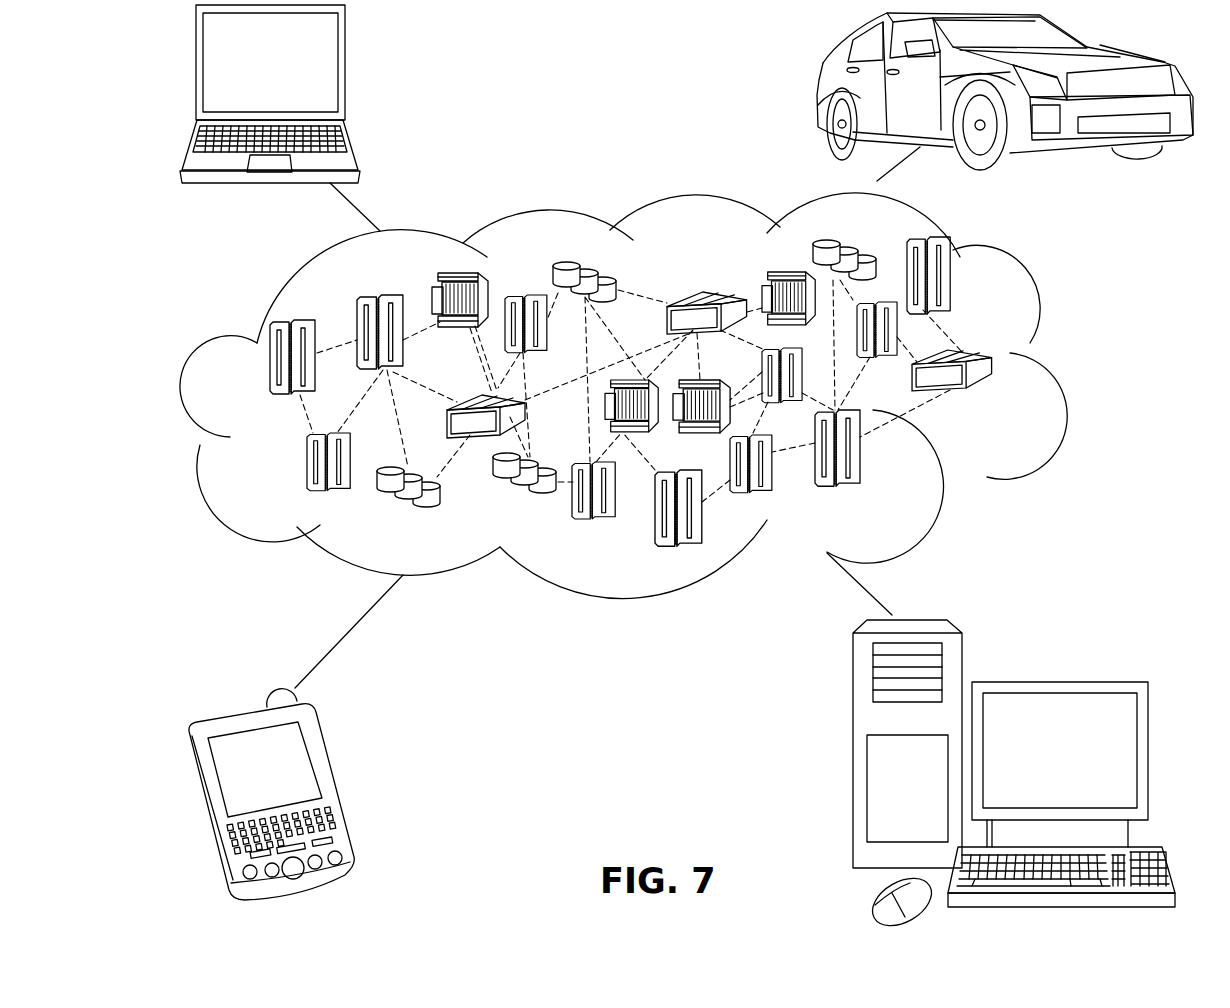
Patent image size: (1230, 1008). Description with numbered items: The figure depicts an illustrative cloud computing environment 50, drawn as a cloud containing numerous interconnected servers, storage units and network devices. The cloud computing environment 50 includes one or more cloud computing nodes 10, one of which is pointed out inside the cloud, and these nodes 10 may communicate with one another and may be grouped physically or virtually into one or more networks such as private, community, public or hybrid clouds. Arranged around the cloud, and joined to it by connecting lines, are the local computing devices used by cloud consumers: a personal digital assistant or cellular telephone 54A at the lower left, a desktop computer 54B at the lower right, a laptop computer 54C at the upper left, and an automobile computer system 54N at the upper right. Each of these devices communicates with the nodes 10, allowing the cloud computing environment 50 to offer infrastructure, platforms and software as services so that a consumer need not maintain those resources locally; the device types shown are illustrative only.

The laptop computer 54C is at (345, 72).
The automobile computer system 54N is at (820, 90).
The personal digital assistant (PDA) or cellular telephone 54A is at (335, 782).
The desktop computer 54B is at (1056, 682).
The cloud computing environment 50 is at (1058, 367).
The cloud computing node 10 is at (995, 402).